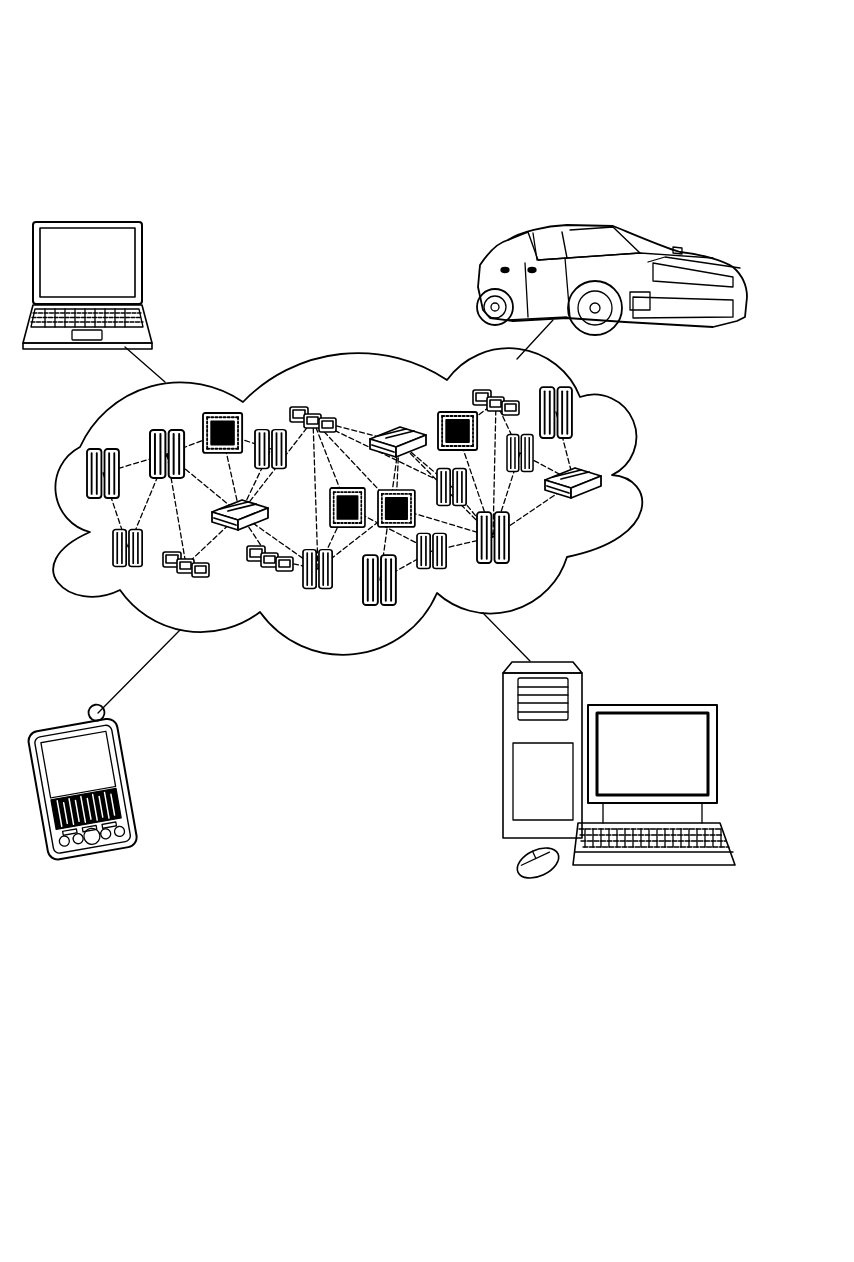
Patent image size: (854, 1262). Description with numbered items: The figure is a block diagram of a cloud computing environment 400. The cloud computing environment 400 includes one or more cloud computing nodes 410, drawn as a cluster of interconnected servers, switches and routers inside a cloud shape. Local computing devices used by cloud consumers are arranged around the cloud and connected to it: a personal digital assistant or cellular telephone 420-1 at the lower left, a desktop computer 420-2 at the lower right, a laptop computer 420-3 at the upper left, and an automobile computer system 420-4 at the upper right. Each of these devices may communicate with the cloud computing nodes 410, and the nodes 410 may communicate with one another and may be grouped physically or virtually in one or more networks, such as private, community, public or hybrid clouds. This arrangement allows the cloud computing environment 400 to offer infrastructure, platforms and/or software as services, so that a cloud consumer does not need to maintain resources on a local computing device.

The cloud computing environment 400 is at (197, 62).
The cloud computing nodes 410 is at (610, 506).
The personal digital assistant (PDA) or cellular telephone 420-1 is at (132, 781).
The desktop computer 420-2 is at (650, 704).
The laptop computer 420-3 is at (142, 270).
The automobile computer system 420-4 is at (480, 282).